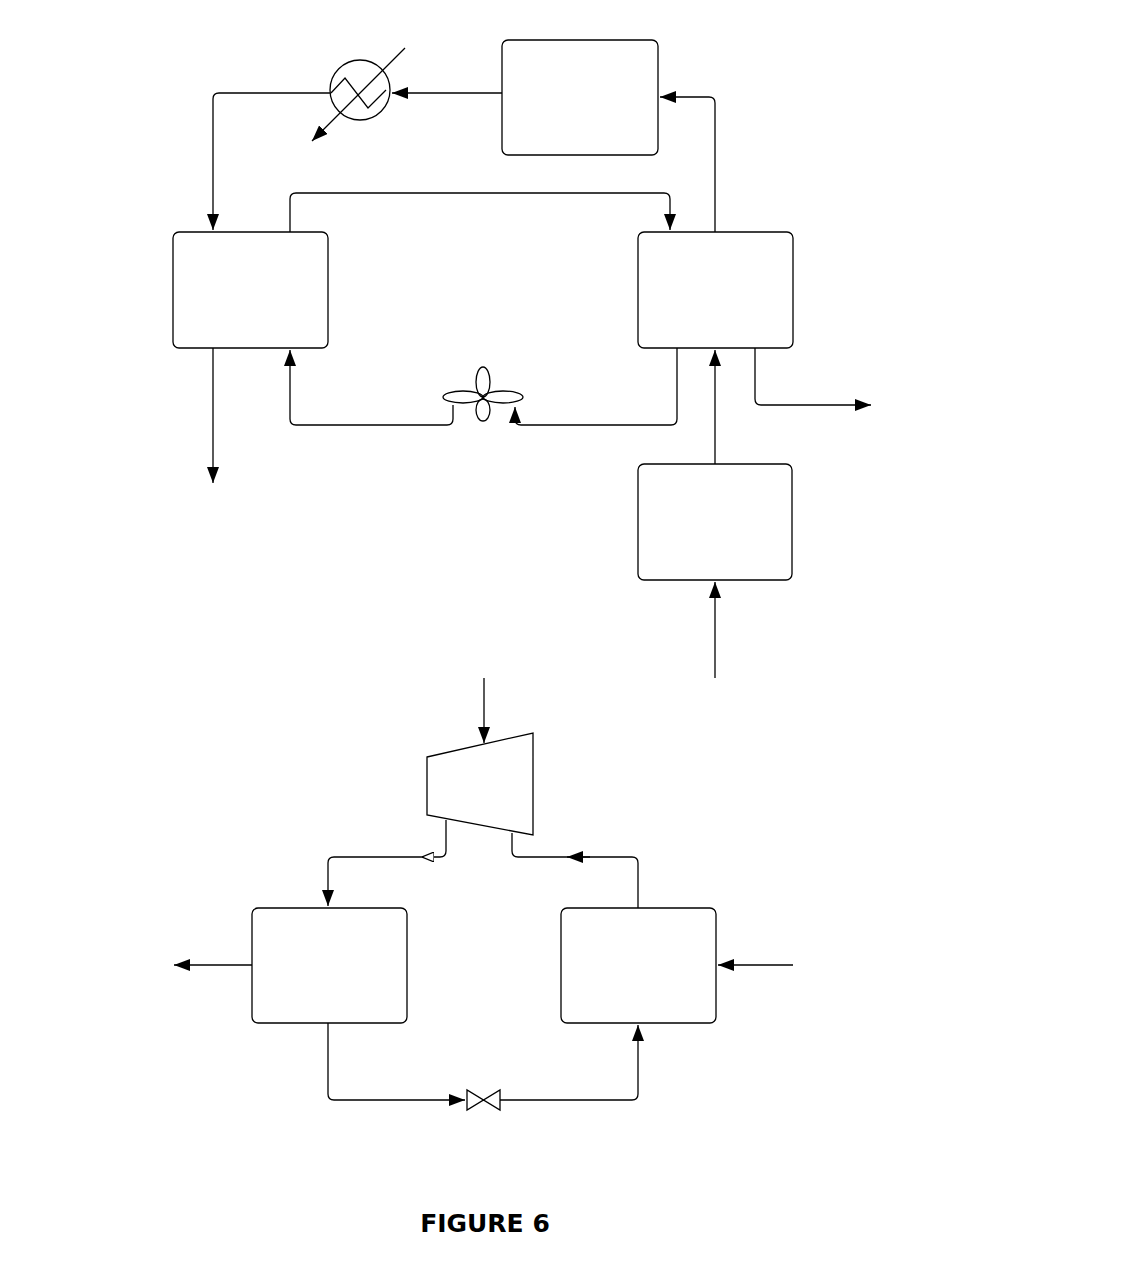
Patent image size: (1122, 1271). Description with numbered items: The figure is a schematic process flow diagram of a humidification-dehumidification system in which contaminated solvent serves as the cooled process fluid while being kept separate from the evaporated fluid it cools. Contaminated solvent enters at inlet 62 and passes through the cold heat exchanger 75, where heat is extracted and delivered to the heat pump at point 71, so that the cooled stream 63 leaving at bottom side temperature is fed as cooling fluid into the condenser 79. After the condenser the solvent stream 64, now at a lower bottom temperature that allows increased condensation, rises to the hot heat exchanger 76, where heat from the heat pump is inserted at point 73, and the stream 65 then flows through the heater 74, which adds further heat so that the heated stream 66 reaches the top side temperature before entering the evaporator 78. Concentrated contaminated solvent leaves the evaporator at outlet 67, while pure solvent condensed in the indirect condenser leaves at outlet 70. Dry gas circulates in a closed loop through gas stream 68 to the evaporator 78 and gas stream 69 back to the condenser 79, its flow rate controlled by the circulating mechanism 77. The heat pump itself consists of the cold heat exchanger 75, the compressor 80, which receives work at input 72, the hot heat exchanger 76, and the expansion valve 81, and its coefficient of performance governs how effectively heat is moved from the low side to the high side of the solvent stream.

The contaminated solvent inlet 62 is at (717, 620).
The cooled contaminated solvent stream 63 is at (717, 425).
The contaminated solvent stream leaving condenser 64 is at (717, 203).
The contaminated solvent stream leaving hot heat exchanger 65 is at (455, 90).
The heated contaminated solvent stream 66 is at (212, 133).
The concentrated contaminated solvent outlet 67 is at (211, 406).
The gas stream to evaporator 68 is at (384, 423).
The gas stream to condenser 69 is at (530, 195).
The pure solvent outlet 70 is at (822, 403).
The heat pump heat input 71 is at (757, 963).
The compressor work input 72 is at (482, 697).
The heat pump heat output 73 is at (213, 963).
The heater 74 is at (360, 56).
The cold heat exchanger 75 is at (636, 502).
The hot heat exchanger 76 is at (660, 58).
The circulating mechanism 77 is at (481, 427).
The evaporator 78 is at (171, 290).
The condenser 79 is at (795, 290).
The compressor 80 is at (535, 782).
The expansion valve 81 is at (483, 1093).